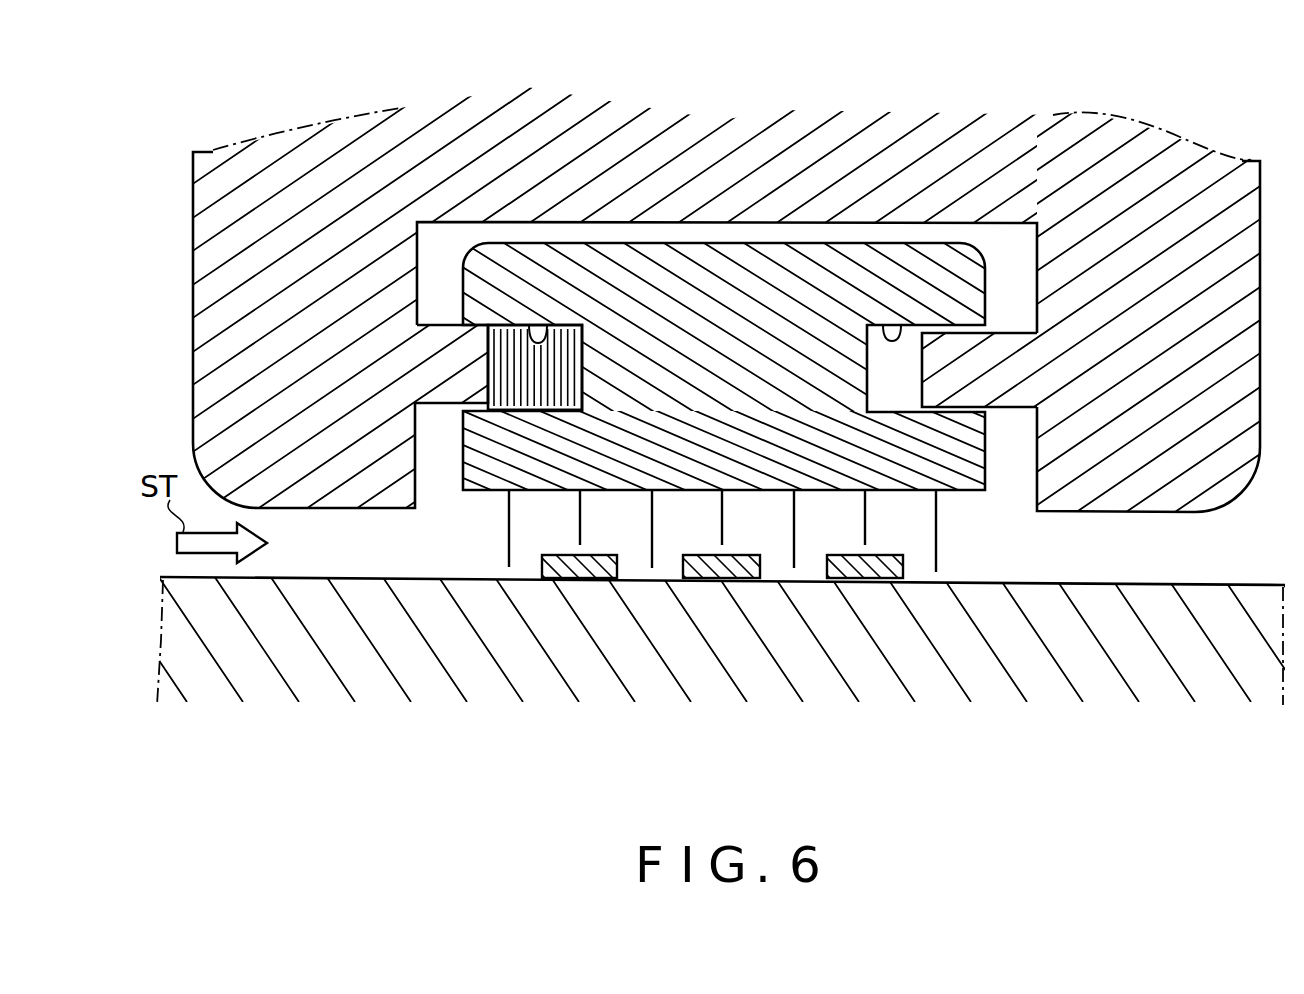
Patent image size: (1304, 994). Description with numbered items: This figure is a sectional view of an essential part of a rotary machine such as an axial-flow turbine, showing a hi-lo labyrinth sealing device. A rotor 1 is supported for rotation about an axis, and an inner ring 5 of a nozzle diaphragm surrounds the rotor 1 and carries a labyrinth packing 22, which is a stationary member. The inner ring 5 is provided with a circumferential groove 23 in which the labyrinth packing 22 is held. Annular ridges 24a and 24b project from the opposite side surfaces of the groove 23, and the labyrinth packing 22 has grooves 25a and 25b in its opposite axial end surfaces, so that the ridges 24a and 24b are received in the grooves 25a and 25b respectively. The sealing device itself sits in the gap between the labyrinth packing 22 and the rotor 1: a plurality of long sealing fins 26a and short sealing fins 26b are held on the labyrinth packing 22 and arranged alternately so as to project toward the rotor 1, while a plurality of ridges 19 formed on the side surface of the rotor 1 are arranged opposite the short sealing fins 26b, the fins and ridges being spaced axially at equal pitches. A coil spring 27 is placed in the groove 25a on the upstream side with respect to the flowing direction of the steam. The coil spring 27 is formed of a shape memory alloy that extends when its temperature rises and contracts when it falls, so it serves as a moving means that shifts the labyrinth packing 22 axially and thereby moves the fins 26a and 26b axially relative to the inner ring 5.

The rotor 1 is at (906, 642).
The inner ring of nozzle diaphragm 5 is at (307, 183).
The ridges 19 is at (579, 572).
The labyrinth packing 22 is at (745, 285).
The circumferential groove 23 is at (658, 235).
The annular ridge 24a is at (450, 363).
The annular ridge 24b is at (1005, 370).
The groove 25a is at (540, 338).
The groove 25b is at (888, 335).
The long sealing fins 26a is at (652, 528).
The short sealing fins 26b is at (722, 518).
The coil spring 27 is at (523, 400).